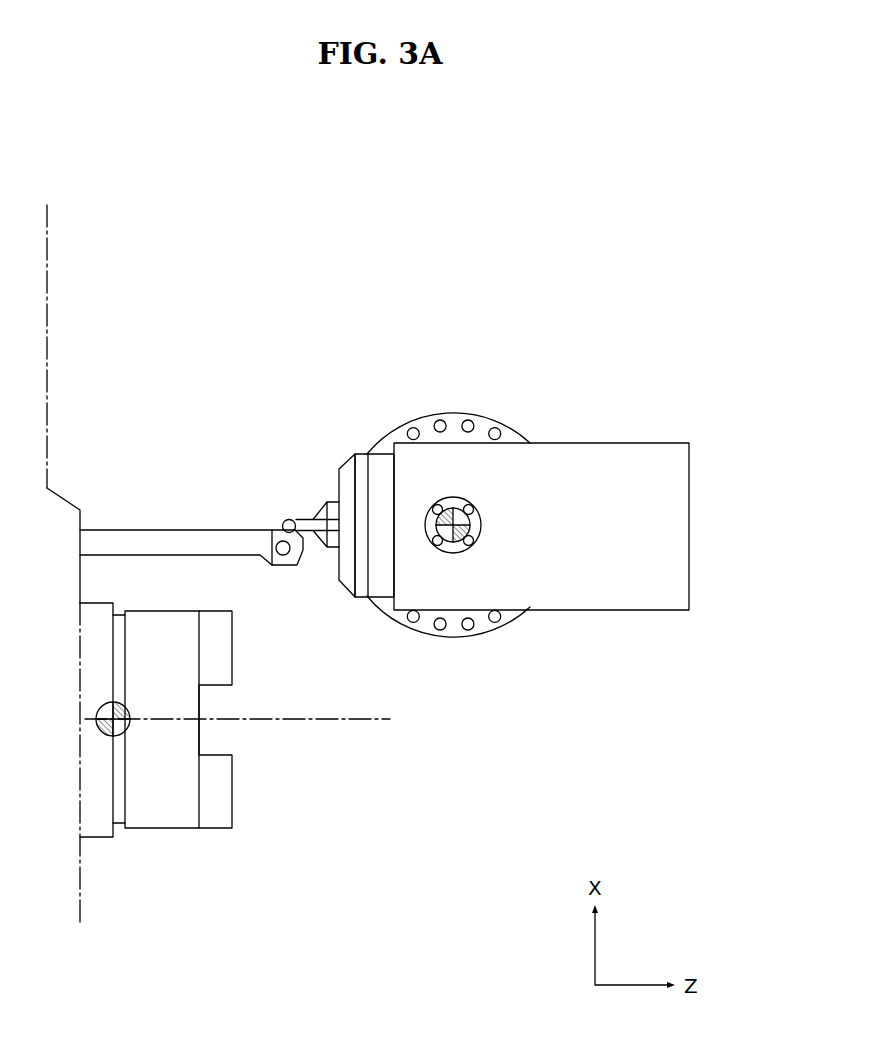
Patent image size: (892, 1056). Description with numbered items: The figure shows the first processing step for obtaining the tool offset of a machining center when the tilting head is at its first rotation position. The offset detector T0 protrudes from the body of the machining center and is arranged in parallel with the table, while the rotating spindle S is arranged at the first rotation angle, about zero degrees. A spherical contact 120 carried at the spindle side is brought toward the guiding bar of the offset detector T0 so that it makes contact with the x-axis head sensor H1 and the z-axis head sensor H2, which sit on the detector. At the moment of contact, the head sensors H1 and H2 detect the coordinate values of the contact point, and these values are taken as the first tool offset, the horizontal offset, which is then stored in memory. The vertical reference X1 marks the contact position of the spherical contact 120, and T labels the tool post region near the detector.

The spherical contact 120 is at (283, 518).
The offset detector T0 is at (168, 537).
The tool post / turret T is at (163, 813).
The rotating spindle S is at (680, 518).
The x-axis head sensor H1 is at (275, 565).
The z-axis head sensor H2 is at (292, 563).
The X-axis reference line X1 is at (290, 497).